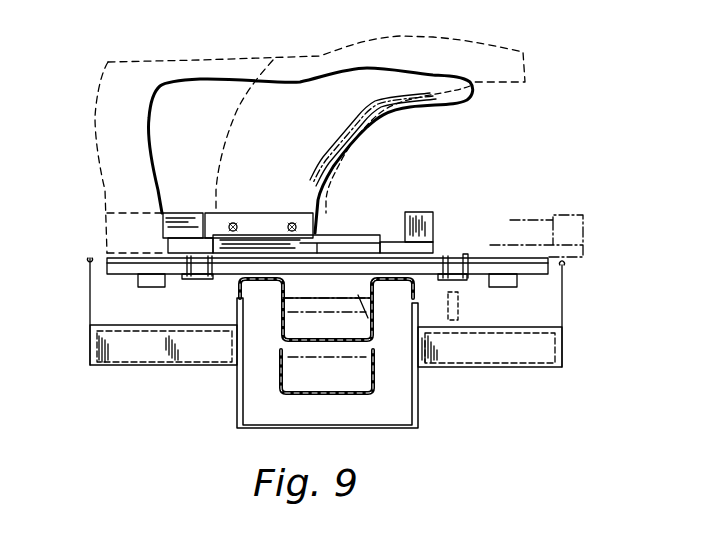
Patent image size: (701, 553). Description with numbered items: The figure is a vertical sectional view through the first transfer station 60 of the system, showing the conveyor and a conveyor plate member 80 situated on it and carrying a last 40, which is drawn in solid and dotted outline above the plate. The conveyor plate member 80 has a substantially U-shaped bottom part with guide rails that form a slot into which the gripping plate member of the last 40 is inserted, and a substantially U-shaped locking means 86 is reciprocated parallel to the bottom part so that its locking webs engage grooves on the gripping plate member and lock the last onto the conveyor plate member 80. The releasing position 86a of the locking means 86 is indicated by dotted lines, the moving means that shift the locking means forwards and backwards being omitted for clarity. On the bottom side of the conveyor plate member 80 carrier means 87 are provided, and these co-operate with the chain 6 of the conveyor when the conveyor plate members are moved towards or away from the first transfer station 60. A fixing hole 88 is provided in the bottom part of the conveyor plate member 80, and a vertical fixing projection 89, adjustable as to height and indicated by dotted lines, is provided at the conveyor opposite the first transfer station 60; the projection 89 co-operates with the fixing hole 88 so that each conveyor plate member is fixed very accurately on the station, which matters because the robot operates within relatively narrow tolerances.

The last 40 is at (198, 107).
The first transfer station 60 is at (99, 248).
The conveyor plate member 80 is at (362, 236).
The locking means 86 is at (432, 224).
The fixing hole 88 is at (457, 268).
The releasing position of the locking means 86a is at (567, 216).
The vertical fixing projection 89 is at (462, 312).
The carrier means 87 is at (350, 325).
The chain 6 is at (370, 340).